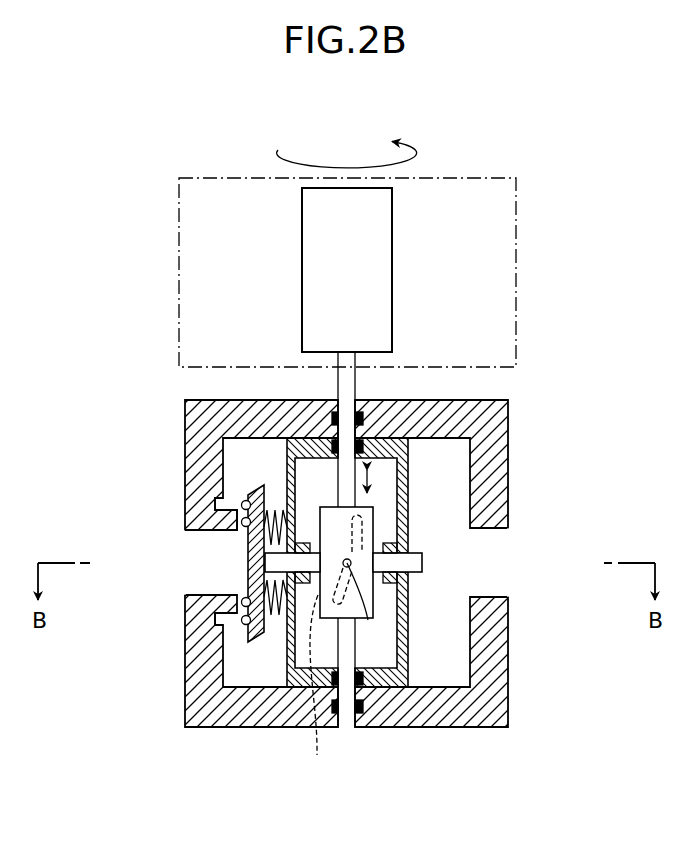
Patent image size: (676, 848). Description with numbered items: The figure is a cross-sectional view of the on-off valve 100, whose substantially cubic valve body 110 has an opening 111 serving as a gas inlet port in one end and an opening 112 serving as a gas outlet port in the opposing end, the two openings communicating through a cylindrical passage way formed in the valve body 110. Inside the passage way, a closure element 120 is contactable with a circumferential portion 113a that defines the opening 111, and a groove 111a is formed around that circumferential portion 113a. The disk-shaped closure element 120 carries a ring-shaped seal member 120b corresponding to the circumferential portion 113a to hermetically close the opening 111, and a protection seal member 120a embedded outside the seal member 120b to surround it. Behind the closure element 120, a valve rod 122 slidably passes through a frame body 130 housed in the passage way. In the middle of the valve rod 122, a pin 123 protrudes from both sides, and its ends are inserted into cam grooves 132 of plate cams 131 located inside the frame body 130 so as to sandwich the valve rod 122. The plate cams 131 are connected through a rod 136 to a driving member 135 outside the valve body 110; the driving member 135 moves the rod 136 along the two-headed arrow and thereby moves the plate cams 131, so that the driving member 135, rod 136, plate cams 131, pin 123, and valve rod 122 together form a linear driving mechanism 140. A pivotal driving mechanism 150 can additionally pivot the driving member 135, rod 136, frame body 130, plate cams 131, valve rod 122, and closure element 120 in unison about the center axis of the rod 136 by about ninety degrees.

The on-off valve 100 is at (553, 282).
The valve body 110 is at (493, 453).
The opening 111 is at (200, 594).
The groove 111a is at (218, 505).
The opening 112 is at (493, 575).
The circumferential portion 113a is at (237, 533).
The closure element 120 is at (263, 640).
The protection seal member 120a is at (245, 503).
The seal member 120b is at (243, 600).
The valve rod 122 is at (413, 562).
The pin 123 is at (368, 620).
The frame body 130 is at (408, 495).
The plate cam 131 is at (365, 588).
The cam groove 132 is at (313, 690).
The driving member 135 is at (380, 268).
The rod 136 is at (343, 383).
The linear driving mechanism 140 is at (443, 382).
The pivotal driving mechanism 150 is at (178, 287).